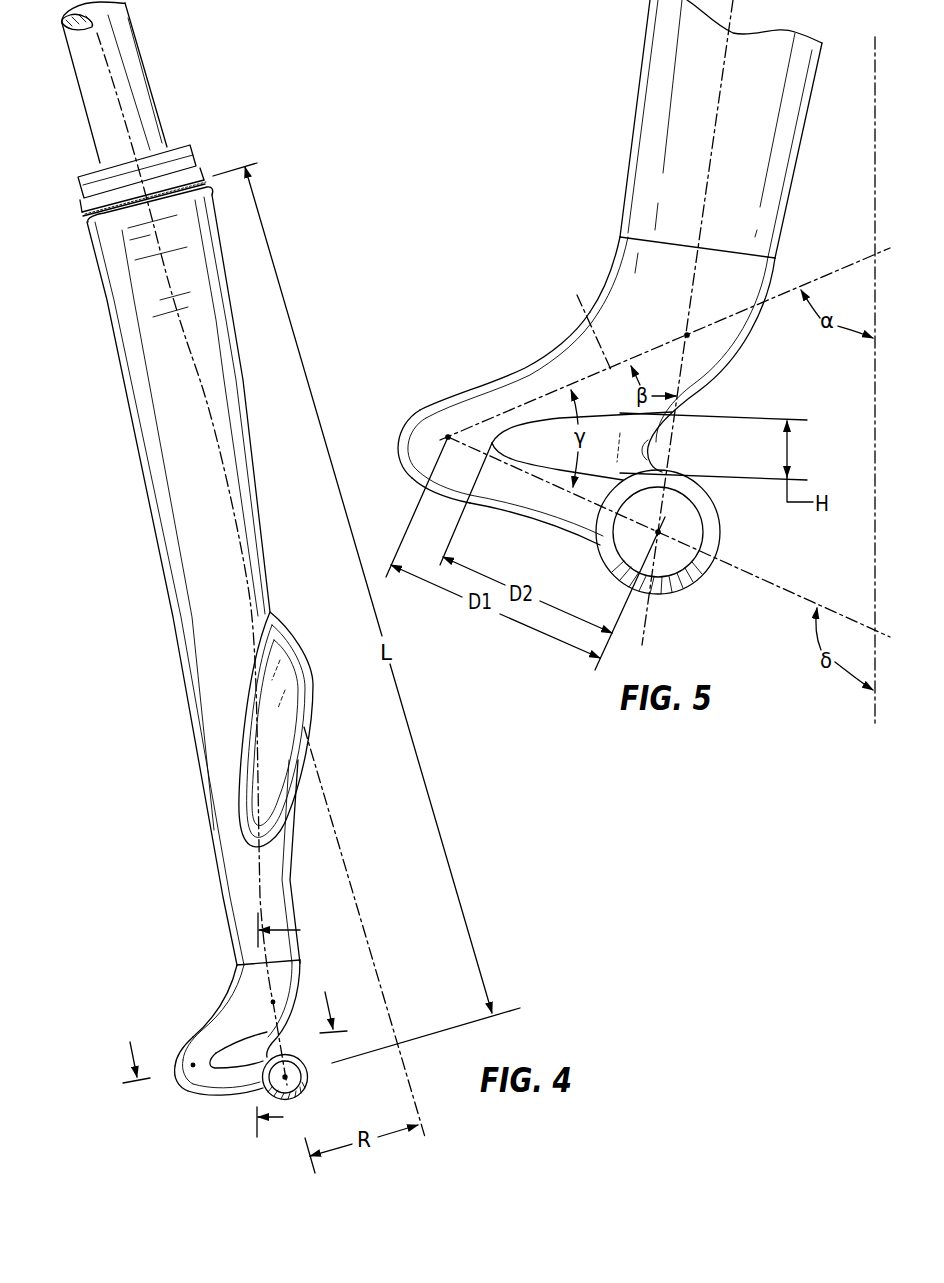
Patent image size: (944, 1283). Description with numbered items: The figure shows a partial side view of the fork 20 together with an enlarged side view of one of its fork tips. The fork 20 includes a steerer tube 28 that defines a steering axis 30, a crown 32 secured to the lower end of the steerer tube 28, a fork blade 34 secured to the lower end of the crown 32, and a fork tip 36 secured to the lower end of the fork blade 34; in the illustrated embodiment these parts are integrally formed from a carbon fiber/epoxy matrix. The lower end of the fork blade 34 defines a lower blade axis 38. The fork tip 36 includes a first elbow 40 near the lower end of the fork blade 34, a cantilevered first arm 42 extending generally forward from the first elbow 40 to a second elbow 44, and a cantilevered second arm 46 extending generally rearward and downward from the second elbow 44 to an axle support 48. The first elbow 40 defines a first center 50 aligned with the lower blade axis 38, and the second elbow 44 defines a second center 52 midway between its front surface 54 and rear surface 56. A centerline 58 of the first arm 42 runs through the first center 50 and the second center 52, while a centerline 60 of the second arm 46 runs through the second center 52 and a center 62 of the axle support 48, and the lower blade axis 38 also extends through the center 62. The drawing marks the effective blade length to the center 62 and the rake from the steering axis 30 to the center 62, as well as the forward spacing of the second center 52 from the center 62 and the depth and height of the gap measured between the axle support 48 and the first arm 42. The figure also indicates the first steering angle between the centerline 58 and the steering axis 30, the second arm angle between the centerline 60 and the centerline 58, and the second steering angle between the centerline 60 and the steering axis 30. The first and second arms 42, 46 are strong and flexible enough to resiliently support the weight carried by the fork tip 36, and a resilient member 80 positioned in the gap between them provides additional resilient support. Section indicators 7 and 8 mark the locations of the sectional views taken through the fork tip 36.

In FIG. 4, the fork 20 is at (96, 511).
In FIG. 4, the steerer tube 28 is at (137, 45).
In FIG. 4, the steering axis 30 is at (329, 811).
In FIG. 5, the steering axis 30 is at (873, 436).
In FIG. 4, the crown 32 is at (100, 232).
In FIG. 4, the fork blade 34 is at (232, 324).
In FIG. 5, the fork blade 34 is at (790, 153).
In FIG. 4, the fork tip 36 is at (230, 1005).
In FIG. 5, the fork tip 36 is at (613, 273).
In FIG. 4, the lower blade axis 38 is at (257, 882).
In FIG. 5, the lower blade axis 38 is at (720, 110).
In FIG. 4, the first elbow 40 is at (297, 968).
In FIG. 5, the first elbow 40 is at (748, 342).
In FIG. 4, the first arm 42 is at (215, 1030).
In FIG. 5, the first arm 42 is at (551, 355).
In FIG. 4, the second elbow 44 is at (173, 1078).
In FIG. 5, the second elbow 44 is at (403, 452).
In FIG. 4, the second arm 46 is at (235, 1085).
In FIG. 5, the second arm 46 is at (523, 500).
In FIG. 4, the axle support 48 is at (305, 1095).
In FIG. 5, the axle support 48 is at (715, 507).
In FIG. 4, the first center 50 is at (271, 1000).
In FIG. 5, the first center 50 is at (689, 337).
In FIG. 5, the second center 52 is at (447, 434).
In FIG. 5, the front surface 54 is at (389, 429).
In FIG. 5, the rear surface 56 is at (527, 427).
In FIG. 5, the centerline of the first arm 58 is at (588, 316).
In FIG. 5, the centerline of the second arm 60 is at (763, 580).
In FIG. 4, the center of the axle support 62 is at (288, 1077).
In FIG. 5, the center of the axle support 62 is at (655, 533).
In FIG. 5, the resilient member 80 is at (646, 448).
In FIG. 4, the section line 7 is at (283, 1025).
In FIG. 4, the section line 8 is at (234, 1026).